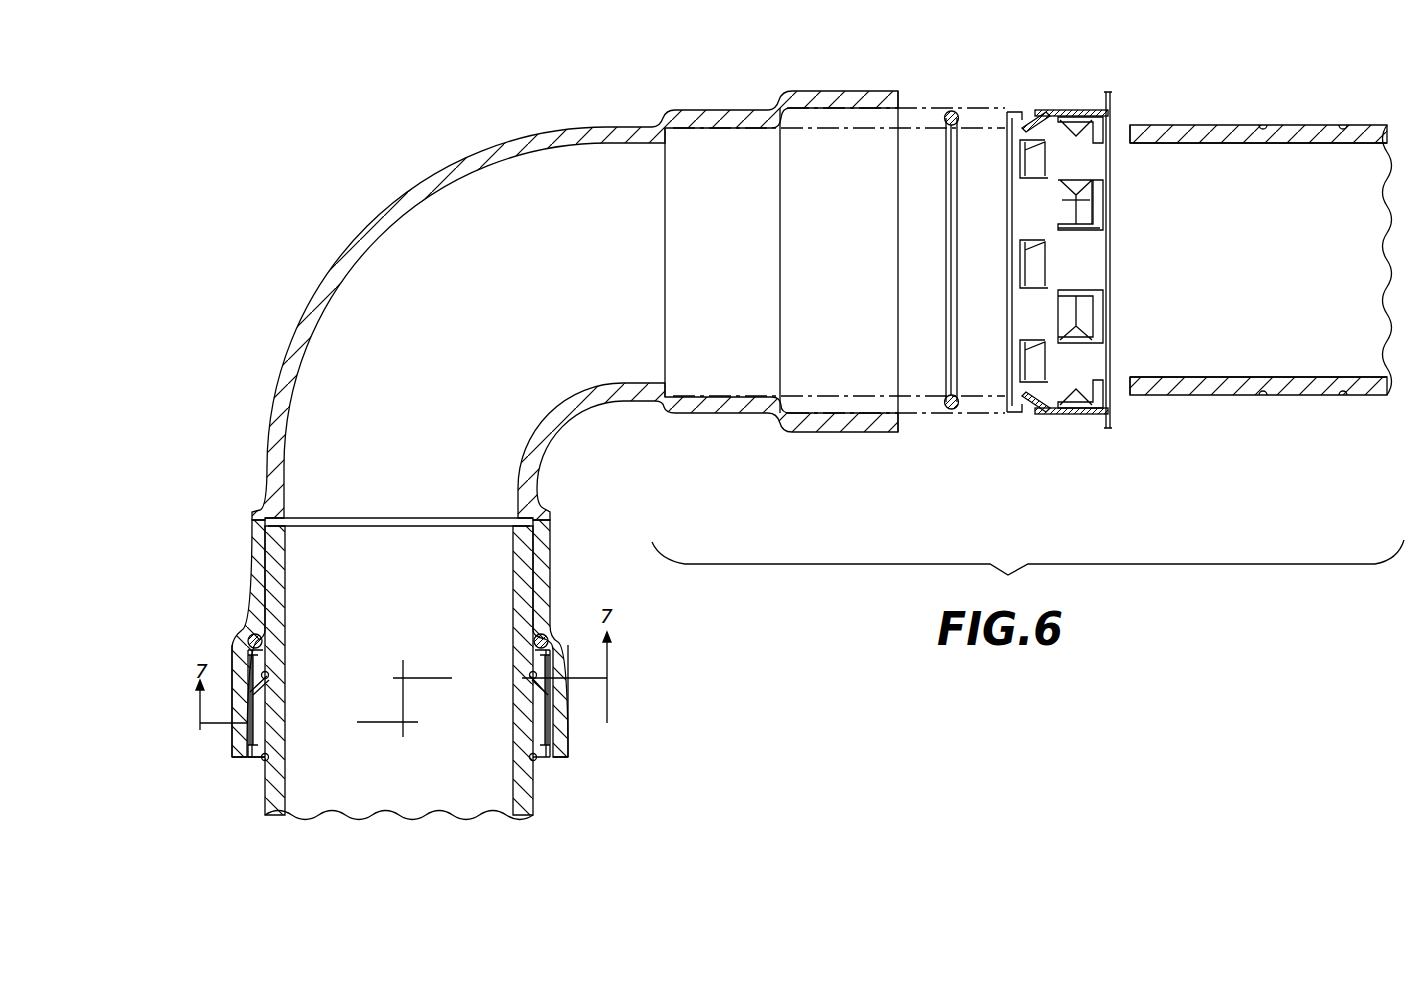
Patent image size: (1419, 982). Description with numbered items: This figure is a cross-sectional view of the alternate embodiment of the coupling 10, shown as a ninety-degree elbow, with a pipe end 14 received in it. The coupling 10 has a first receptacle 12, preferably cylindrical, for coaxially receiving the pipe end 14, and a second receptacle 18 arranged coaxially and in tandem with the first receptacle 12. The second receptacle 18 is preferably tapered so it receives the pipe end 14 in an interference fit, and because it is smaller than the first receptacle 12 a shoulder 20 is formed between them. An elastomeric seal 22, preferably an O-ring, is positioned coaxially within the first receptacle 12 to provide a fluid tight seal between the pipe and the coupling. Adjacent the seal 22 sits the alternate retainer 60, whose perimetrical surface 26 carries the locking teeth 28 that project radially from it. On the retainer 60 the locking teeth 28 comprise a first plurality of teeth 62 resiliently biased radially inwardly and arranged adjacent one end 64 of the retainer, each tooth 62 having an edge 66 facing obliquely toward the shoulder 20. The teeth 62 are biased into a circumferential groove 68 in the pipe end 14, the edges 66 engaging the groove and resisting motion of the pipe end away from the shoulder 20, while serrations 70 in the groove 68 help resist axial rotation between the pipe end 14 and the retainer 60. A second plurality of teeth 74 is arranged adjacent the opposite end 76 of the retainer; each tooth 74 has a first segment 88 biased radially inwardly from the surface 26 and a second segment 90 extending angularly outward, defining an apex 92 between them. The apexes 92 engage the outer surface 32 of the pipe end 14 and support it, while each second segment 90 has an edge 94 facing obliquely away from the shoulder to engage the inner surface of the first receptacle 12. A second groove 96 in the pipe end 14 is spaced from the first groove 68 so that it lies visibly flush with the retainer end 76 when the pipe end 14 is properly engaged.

The coupling 10 is at (442, 186).
The first receptacle 12 is at (828, 92).
The pipe end 14 is at (1195, 125).
The second receptacle 18 is at (702, 110).
The shoulder 20 is at (795, 412).
The elastomeric seal 22 is at (952, 412).
The perimetrical surface 26 is at (1065, 112).
The locking teeth 28 is at (1085, 320).
The outer surface of pipe end 32 is at (1312, 125).
The retainer 60 is at (1072, 418).
The first plurality of teeth 62 is at (1030, 162).
The end of retainer 64 is at (1010, 118).
The edge of tooth 66 is at (1032, 350).
The circumferential groove 68 is at (1263, 395).
The serrations 70 is at (1263, 125).
The second plurality of teeth 74 is at (1093, 195).
The end of retainer 76 is at (1108, 112).
The first segment 88 is at (1075, 205).
The second segment 90 is at (1085, 205).
The apex 92 is at (1092, 230).
The edge 94 is at (1092, 300).
The second groove 96 is at (1343, 395).